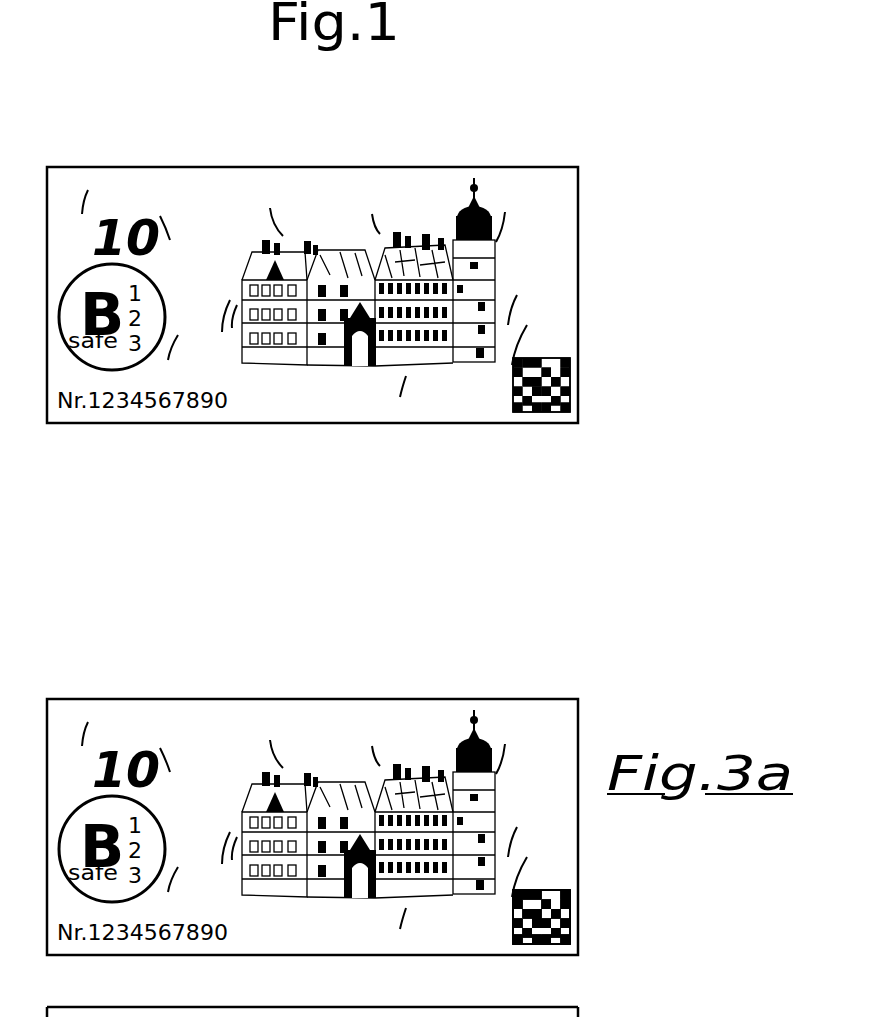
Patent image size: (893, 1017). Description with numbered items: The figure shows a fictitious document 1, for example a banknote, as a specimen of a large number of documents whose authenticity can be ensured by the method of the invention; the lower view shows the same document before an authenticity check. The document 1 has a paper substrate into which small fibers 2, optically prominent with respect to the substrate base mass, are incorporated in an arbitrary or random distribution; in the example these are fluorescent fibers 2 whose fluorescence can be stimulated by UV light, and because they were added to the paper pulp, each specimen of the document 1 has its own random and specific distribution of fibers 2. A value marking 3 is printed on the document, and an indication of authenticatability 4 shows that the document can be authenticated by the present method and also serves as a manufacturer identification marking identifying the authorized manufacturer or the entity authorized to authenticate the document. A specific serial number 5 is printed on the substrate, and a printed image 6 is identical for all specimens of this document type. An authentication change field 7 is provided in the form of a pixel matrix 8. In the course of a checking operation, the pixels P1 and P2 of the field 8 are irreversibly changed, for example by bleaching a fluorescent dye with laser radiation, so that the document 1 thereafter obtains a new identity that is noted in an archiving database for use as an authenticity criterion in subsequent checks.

In FIG. 1, the document 1 is at (366, 166).
In FIG. 1, the fibers 2 is at (100, 197).
In FIG. 1, the value marking 3 is at (165, 213).
In FIG. 1, the indication of authenticatability 4 is at (105, 342).
In FIG. 1, the serial number 5 is at (213, 412).
In FIG. 1, the printed image 6 is at (430, 365).
In FIG. 1, the authentication change field 7 is at (540, 412).
In FIG. 3A, the authentication change field 7 is at (583, 941).
In FIG. 1, the pixel matrix 8 is at (548, 360).
In FIG. 3A, the pixel matrix 8 is at (545, 886).
In FIG. 3A, the pixel P1 is at (560, 907).
In FIG. 3A, the pixel P2 is at (528, 925).